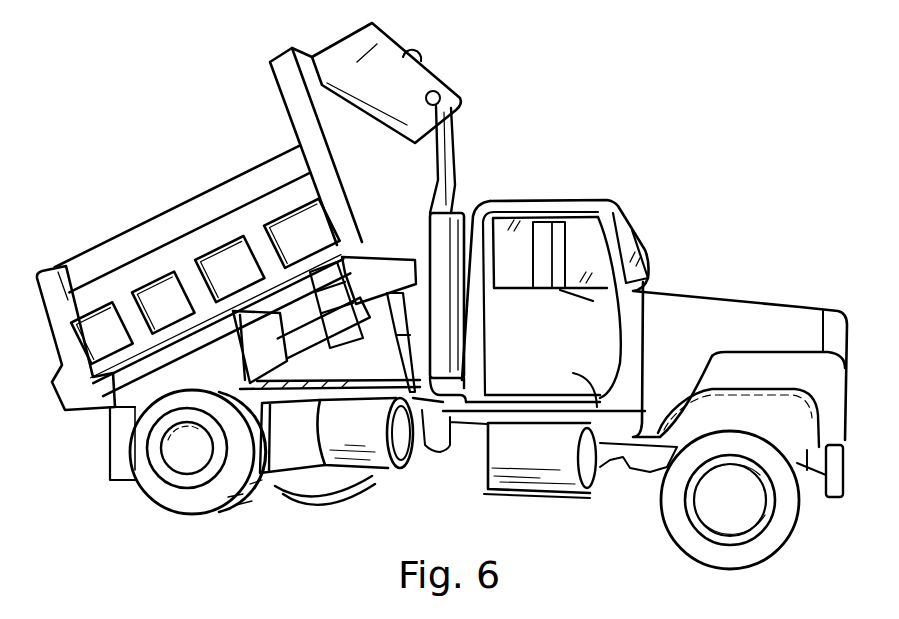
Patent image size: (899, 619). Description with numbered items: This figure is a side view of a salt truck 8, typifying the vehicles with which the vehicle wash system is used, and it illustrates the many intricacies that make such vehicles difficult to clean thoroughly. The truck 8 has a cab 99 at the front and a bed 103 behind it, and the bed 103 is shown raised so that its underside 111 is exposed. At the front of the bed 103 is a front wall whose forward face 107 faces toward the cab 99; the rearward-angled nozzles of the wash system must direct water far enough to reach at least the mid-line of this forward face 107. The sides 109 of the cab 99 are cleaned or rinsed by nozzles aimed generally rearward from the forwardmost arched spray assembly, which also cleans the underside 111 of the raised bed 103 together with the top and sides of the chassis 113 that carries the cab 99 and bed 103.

The salt truck 8 is at (650, 75).
The cab 99 is at (607, 214).
The bed 103 is at (190, 200).
The forward face of the front wall 107 is at (378, 167).
The sides of the cab 109 is at (592, 465).
The underside of the raised bed 111 is at (288, 302).
The chassis 113 is at (423, 410).